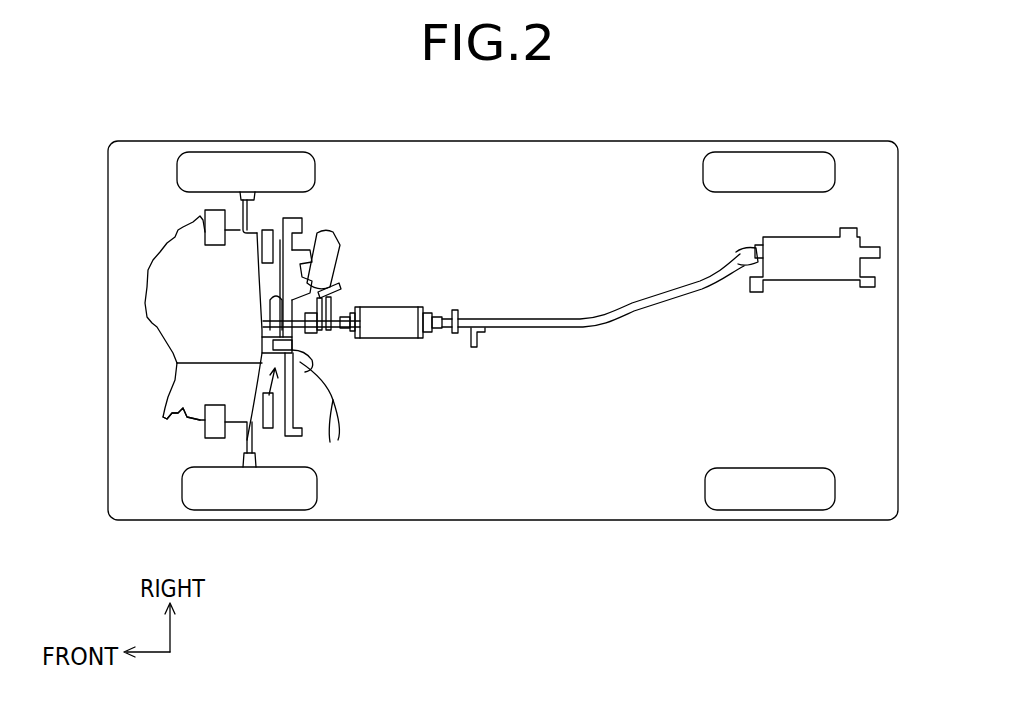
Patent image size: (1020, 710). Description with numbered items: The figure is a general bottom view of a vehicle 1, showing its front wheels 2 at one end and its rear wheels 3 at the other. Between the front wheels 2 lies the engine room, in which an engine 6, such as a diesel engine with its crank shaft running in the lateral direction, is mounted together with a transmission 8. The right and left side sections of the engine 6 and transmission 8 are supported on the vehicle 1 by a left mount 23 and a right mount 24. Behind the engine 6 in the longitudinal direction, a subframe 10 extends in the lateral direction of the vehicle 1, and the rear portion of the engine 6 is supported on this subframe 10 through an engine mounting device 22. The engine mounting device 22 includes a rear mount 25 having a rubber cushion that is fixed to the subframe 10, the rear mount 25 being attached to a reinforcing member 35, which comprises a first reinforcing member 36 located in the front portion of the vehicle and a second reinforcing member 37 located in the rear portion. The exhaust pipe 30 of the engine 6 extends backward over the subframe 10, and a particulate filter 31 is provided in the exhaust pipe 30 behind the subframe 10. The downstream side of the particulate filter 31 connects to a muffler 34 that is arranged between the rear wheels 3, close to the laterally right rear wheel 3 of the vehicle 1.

The vehicle 1 is at (830, 114).
The front wheels 2 is at (207, 168).
The rear wheels 3 is at (750, 168).
The engine 6 is at (152, 255).
The transmission 8 is at (180, 412).
The subframe 10 is at (334, 400).
The engine mounting device 22 is at (271, 420).
The left mount 23 is at (212, 422).
The right mount 24 is at (207, 230).
The rear mount 25 is at (330, 353).
The exhaust pipe 30 is at (335, 297).
The particulate filter 31 is at (403, 315).
The muffler 34 is at (800, 250).
The reinforcing member 35 is at (303, 233).
The first reinforcing member 36 is at (267, 228).
The second reinforcing member 37 is at (330, 380).